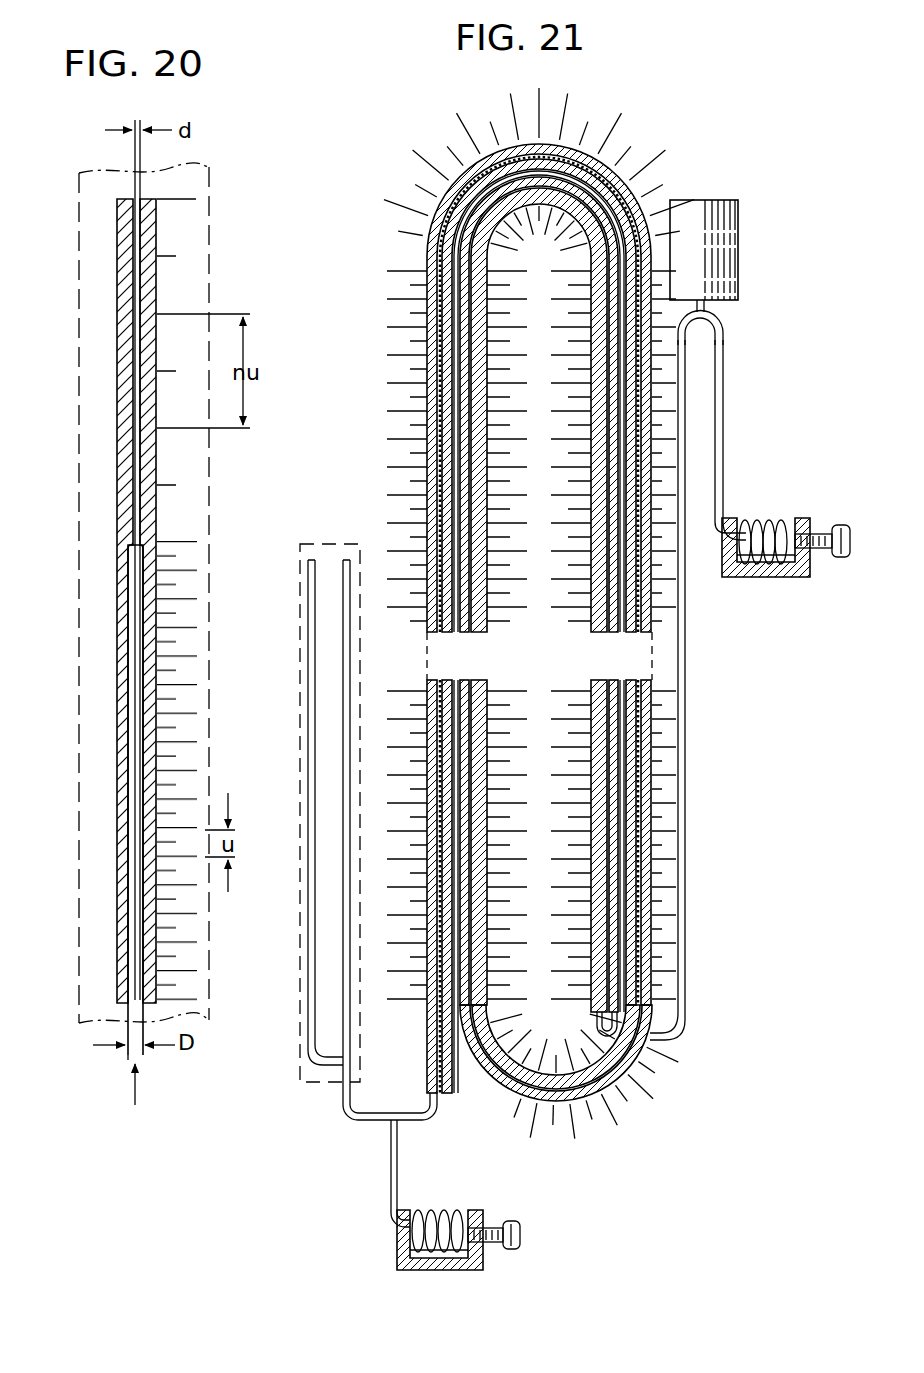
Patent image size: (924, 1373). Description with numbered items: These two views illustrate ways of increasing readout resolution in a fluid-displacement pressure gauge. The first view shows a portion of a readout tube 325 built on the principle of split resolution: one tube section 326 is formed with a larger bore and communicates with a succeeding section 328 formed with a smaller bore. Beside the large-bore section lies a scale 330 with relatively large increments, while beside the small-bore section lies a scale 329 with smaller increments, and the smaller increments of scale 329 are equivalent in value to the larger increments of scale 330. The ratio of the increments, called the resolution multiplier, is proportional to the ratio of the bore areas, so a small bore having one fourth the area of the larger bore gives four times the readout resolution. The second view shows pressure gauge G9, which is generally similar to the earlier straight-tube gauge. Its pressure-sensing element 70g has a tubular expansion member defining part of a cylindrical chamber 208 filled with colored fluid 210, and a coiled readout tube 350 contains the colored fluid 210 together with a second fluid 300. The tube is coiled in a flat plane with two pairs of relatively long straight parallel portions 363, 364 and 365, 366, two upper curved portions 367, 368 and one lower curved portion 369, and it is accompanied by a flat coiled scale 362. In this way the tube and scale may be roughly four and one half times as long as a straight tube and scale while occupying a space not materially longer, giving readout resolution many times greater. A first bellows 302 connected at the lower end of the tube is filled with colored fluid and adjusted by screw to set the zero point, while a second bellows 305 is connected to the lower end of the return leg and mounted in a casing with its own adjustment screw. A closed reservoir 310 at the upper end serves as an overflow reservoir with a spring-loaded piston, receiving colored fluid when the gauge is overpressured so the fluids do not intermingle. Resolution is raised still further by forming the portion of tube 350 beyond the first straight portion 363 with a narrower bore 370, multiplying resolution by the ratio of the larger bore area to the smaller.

In FIG. 20, the readout tube 325 is at (114, 796).
In FIG. 20, the tube section 326 is at (117, 758).
In FIG. 20, the tube section 328 is at (117, 374).
In FIG. 20, the scale 329 is at (180, 656).
In FIG. 20, the scale 330 is at (180, 316).
In FIG. 21, the cylindrical chamber 208 is at (301, 942).
In FIG. 21, the pressure-sensing element 70g is at (305, 1000).
In FIG. 21, the colored fluid 210 is at (443, 427).
In FIG. 21, the fluid 300 is at (651, 594).
In FIG. 21, the first bellows 302 is at (430, 1210).
In FIG. 21, the second bellows 305 is at (751, 520).
In FIG. 21, the closed reservoir 310 is at (737, 266).
In FIG. 21, the coiled readout tube 350 is at (423, 334).
In FIG. 21, the flat coiled scale 362 is at (415, 300).
In FIG. 21, the straight parallel portion 363 is at (432, 254).
In FIG. 21, the straight parallel portion 364 is at (465, 370).
In FIG. 21, the straight parallel portion 365 is at (621, 706).
In FIG. 21, the straight parallel portion 366 is at (651, 748).
In FIG. 21, the upper curved portion 367 is at (546, 146).
In FIG. 21, the upper curved portion 368 is at (571, 192).
In FIG. 21, the lower curved portion 369 is at (541, 1101).
In FIG. 21, the narrower bore 370 is at (438, 237).
In FIG. 21, the pressure gauge G9 is at (691, 160).